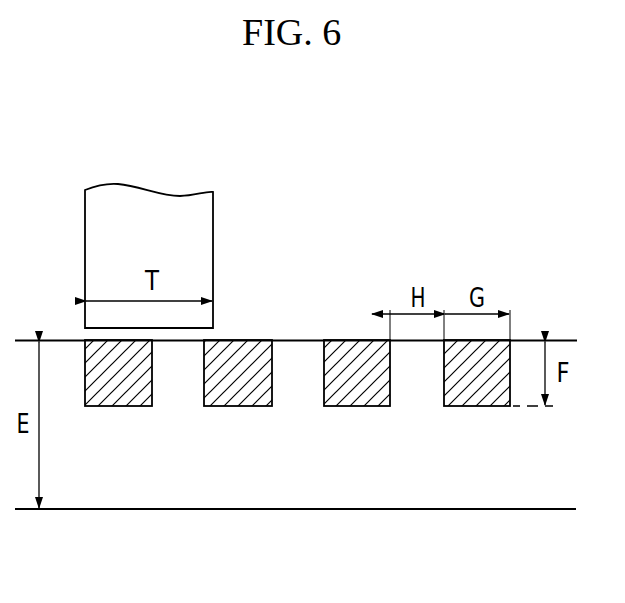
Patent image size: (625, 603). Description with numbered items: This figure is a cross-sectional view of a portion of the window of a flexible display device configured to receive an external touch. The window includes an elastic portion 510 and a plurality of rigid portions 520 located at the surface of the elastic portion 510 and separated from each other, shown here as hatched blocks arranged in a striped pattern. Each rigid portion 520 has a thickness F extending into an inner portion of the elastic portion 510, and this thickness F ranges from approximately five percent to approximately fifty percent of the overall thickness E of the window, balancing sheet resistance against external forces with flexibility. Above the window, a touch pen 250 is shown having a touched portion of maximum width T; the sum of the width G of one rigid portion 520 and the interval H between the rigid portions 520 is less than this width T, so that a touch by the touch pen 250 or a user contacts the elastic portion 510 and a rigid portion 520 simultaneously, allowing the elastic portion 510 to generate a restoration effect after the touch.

The touch pen 250 is at (200, 208).
The elastic portion 510 is at (336, 478).
The rigid portions 520 is at (242, 387).